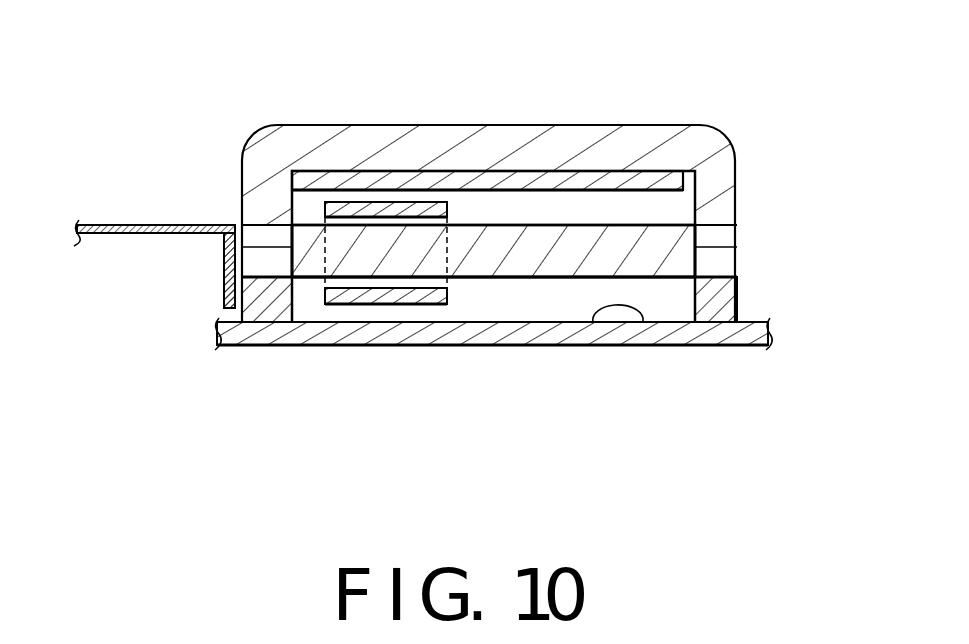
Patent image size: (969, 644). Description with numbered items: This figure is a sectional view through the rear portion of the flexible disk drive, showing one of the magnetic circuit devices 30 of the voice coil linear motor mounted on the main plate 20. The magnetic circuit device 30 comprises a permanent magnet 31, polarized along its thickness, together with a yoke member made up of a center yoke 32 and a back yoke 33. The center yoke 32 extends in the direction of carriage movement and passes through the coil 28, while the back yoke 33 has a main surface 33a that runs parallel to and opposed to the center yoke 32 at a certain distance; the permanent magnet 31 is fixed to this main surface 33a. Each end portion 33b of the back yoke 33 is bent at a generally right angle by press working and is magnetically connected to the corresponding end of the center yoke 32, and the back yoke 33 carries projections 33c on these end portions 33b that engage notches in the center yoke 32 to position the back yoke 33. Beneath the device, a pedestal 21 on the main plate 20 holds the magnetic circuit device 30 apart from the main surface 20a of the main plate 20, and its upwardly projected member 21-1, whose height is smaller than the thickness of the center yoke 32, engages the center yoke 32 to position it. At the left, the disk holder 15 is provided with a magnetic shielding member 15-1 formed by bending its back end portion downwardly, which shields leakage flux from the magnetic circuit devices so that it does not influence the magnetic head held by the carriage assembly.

The disk holder 15 is at (107, 223).
The magnetic shielding member 15-1 is at (222, 255).
The main plate 20 is at (522, 348).
The main surface of the main plate 20a is at (643, 322).
The pedestal 21 is at (728, 292).
The projected member 21-1 is at (723, 260).
The coil 28 is at (355, 300).
The magnetic circuit device 30 is at (490, 219).
The permanent magnet 31 is at (327, 183).
The center yoke 32 is at (474, 278).
The back yoke 33 is at (490, 177).
The main surface of the back yoke 33a is at (587, 167).
The end portion of the back yoke 33b is at (253, 203).
The projection of the back yoke 33c is at (723, 233).